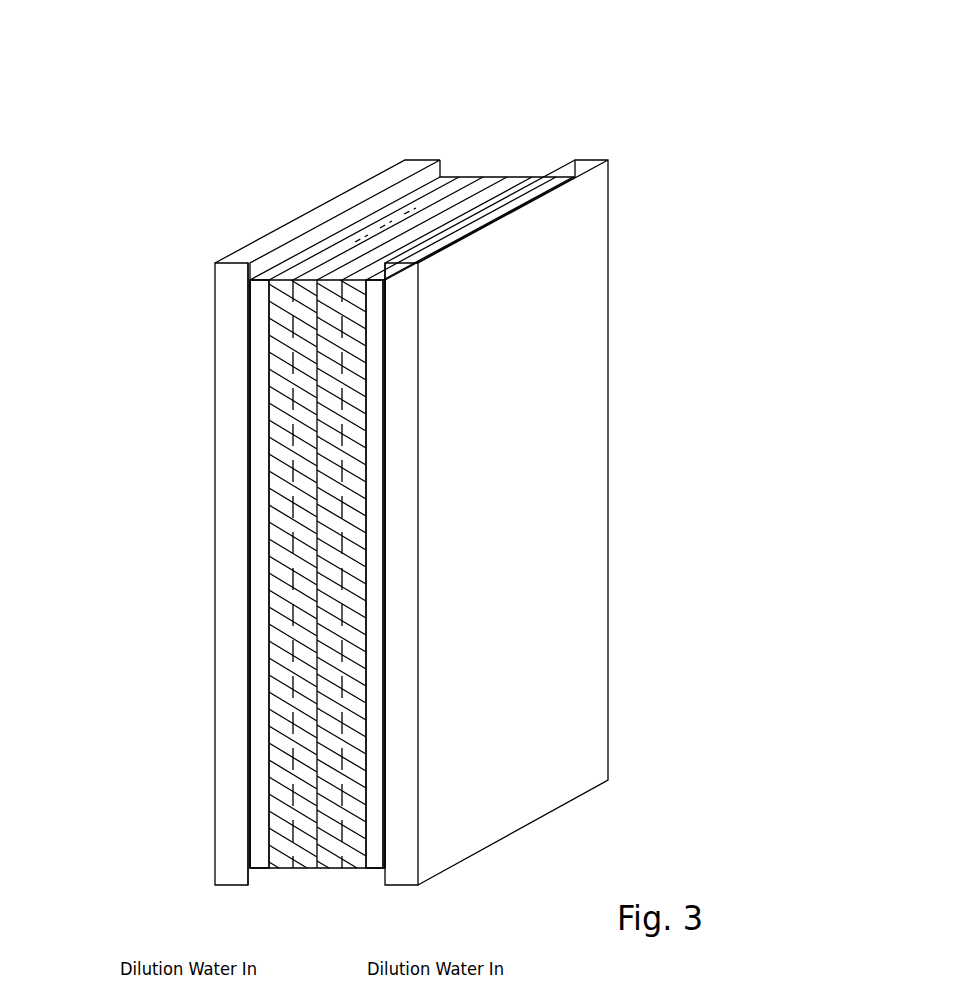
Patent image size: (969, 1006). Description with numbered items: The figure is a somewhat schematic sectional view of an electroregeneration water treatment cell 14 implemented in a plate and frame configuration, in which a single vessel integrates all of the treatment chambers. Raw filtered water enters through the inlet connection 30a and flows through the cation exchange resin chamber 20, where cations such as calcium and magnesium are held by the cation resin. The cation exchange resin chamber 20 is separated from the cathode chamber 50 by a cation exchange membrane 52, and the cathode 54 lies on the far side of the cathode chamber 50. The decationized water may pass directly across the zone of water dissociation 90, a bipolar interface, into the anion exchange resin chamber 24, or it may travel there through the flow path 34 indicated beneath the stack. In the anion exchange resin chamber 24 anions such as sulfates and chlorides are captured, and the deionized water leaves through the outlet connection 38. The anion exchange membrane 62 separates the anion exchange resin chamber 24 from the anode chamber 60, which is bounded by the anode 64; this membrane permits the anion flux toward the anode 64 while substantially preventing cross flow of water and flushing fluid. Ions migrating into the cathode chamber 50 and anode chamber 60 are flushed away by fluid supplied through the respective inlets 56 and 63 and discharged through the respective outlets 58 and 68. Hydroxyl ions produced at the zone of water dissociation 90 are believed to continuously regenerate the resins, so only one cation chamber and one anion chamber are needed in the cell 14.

The electrodeionization cell 14 is at (664, 225).
The inlet connection 30a is at (400, 218).
The outlet connection 38 is at (456, 230).
The anode chamber outlet 68 is at (540, 175).
The cathode chamber outlet 58 is at (271, 252).
The cathode 54 is at (244, 323).
The cation exchange membrane 52 is at (261, 389).
The cation exchange resin chamber 20 is at (292, 481).
The cathode chamber 50 is at (258, 623).
The anode 64 is at (391, 343).
The anion exchange membrane 62 is at (371, 389).
The zone of water dissociation 90 is at (321, 439).
The anion exchange resin chamber 24 is at (349, 503).
The anode chamber 60 is at (378, 618).
The cathode chamber inlet 56 is at (260, 870).
The flow path 34 is at (342, 870).
The anode chamber inlet 63 is at (378, 870).